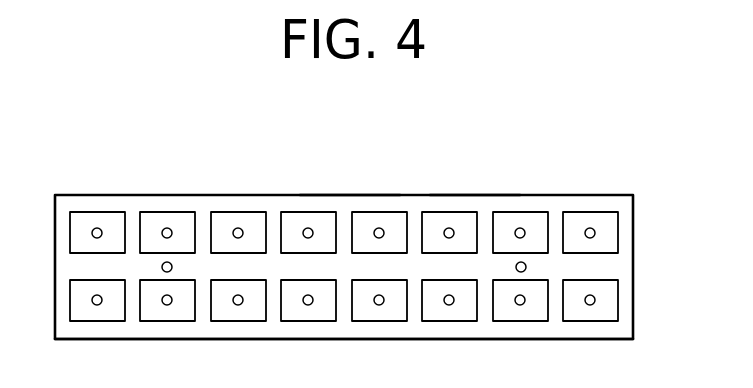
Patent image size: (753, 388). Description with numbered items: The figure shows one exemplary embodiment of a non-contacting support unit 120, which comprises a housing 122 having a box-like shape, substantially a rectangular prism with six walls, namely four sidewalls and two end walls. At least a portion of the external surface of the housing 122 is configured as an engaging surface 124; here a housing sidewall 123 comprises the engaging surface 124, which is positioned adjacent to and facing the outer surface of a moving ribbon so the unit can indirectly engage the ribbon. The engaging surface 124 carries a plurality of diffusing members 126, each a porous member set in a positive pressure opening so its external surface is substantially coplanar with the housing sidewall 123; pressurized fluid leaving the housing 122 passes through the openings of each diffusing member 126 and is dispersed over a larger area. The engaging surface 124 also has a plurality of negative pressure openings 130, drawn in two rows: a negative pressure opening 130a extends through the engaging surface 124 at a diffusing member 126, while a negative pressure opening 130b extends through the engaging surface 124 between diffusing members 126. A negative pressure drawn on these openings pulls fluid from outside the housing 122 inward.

The non-contacting support unit 120 is at (588, 194).
The housing 122 is at (140, 339).
The housing sidewall 123 is at (470, 201).
The engaging surface 124 is at (343, 200).
The diffusing member 126 is at (120, 217).
The negative pressure opening 130 is at (306, 306).
The negative pressure opening at a diffusing member 130a is at (100, 228).
The negative pressure opening between diffusing members 130b is at (172, 262).